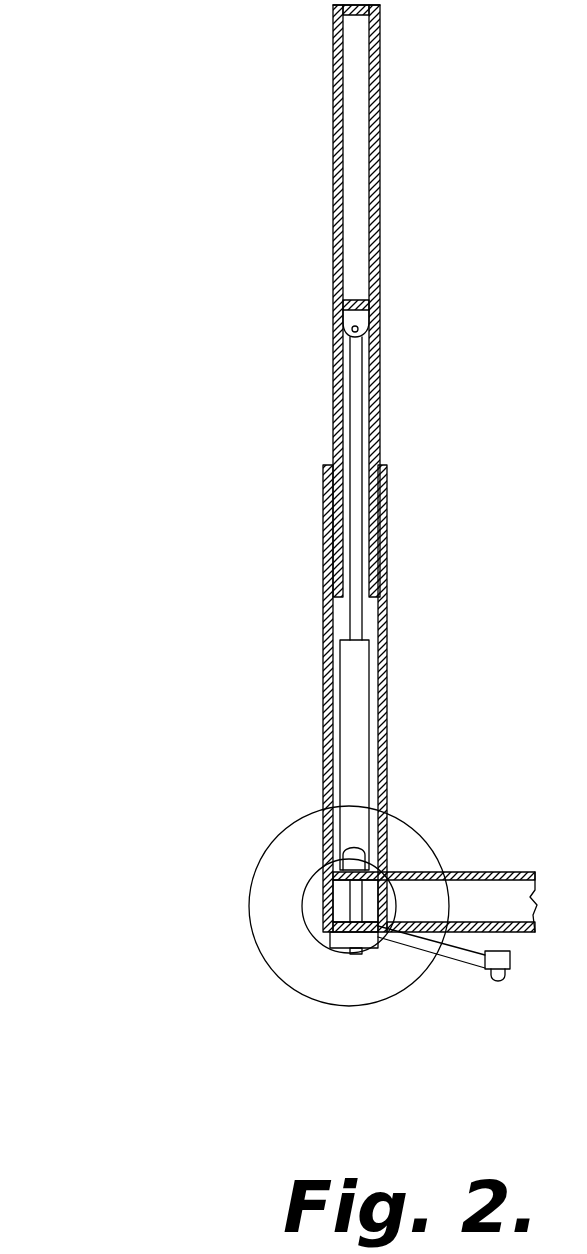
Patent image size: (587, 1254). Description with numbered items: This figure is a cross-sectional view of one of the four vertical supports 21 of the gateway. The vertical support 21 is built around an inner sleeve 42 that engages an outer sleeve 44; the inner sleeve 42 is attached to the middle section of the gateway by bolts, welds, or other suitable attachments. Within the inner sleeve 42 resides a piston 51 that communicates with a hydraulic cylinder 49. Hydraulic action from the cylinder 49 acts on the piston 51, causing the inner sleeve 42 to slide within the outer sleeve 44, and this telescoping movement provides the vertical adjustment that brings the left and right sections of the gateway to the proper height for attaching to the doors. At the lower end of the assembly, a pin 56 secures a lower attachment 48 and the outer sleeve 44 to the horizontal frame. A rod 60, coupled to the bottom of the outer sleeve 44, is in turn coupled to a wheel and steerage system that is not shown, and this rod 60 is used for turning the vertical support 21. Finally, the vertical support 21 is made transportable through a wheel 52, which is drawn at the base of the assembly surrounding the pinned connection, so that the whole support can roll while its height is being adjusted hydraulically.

The vertical support 21 is at (138, 278).
The inner sleeve 42 is at (380, 117).
The outer sleeve 44 is at (386, 708).
The lower attachment 48 is at (364, 853).
The hydraulic cylinder 49 is at (360, 613).
The piston 51 is at (367, 323).
The wheel 52 is at (291, 823).
The pin 56 is at (378, 895).
The rod 60 is at (455, 956).